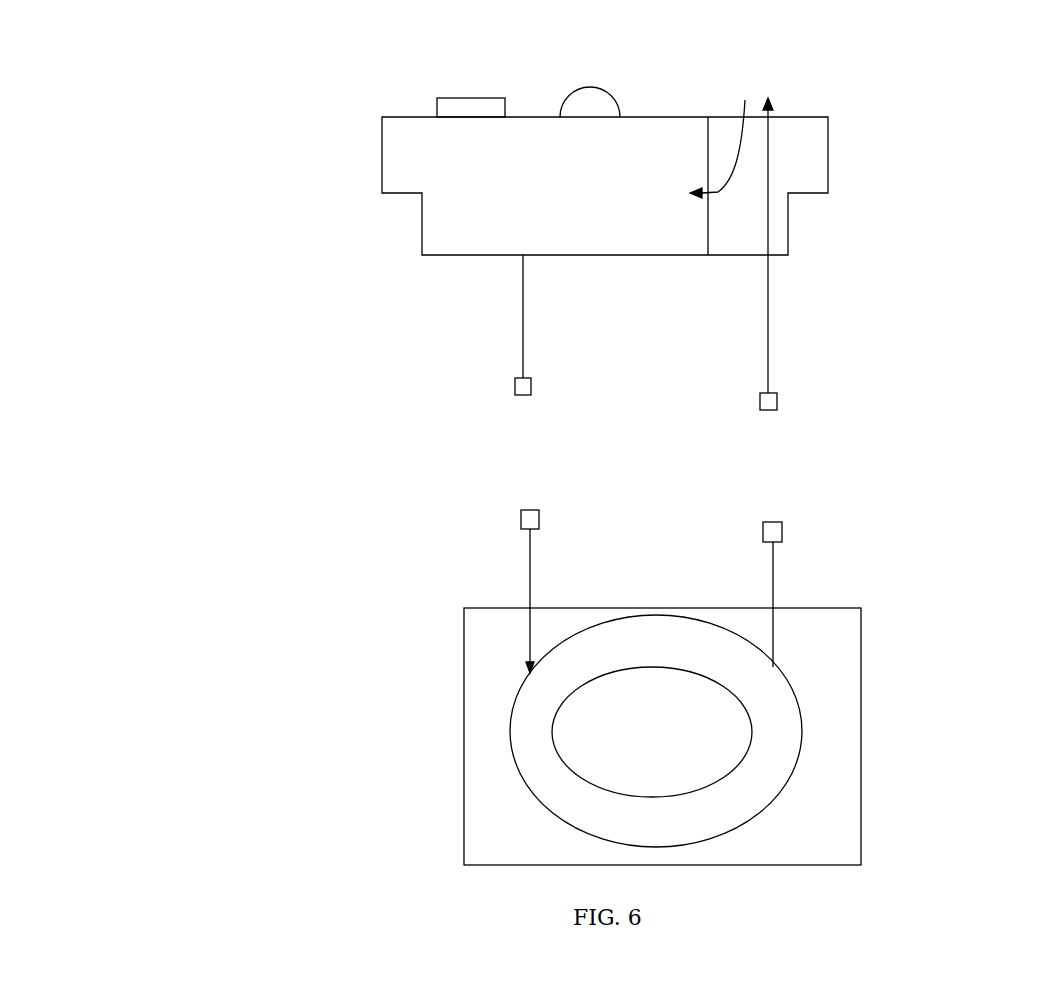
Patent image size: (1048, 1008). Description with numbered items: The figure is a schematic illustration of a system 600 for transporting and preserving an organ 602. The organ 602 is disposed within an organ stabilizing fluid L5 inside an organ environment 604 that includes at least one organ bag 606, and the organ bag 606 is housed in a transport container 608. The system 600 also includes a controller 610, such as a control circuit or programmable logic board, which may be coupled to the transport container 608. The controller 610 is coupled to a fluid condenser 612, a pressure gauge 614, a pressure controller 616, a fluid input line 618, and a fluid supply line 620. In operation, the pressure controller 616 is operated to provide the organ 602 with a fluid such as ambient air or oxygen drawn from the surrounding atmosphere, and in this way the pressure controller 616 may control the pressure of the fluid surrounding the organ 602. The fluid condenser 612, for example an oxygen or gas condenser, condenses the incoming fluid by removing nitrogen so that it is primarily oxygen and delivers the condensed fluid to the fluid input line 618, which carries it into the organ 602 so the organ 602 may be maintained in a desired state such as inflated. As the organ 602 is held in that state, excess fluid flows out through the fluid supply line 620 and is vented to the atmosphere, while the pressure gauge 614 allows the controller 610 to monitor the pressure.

The system 600 is at (608, 690).
The organ 602 is at (752, 742).
The organ environment 604 is at (660, 725).
The organ bag 606 is at (783, 677).
The transport container 608 is at (463, 645).
The controller 610 is at (477, 154).
The fluid condenser 612 is at (503, 197).
The pressure gauge 614 is at (580, 87).
The pressure controller 616 is at (428, 98).
The fluid input line 618 is at (523, 332).
The fluid supply line 620 is at (769, 293).
The organ stabilizing fluid L5 is at (753, 772).